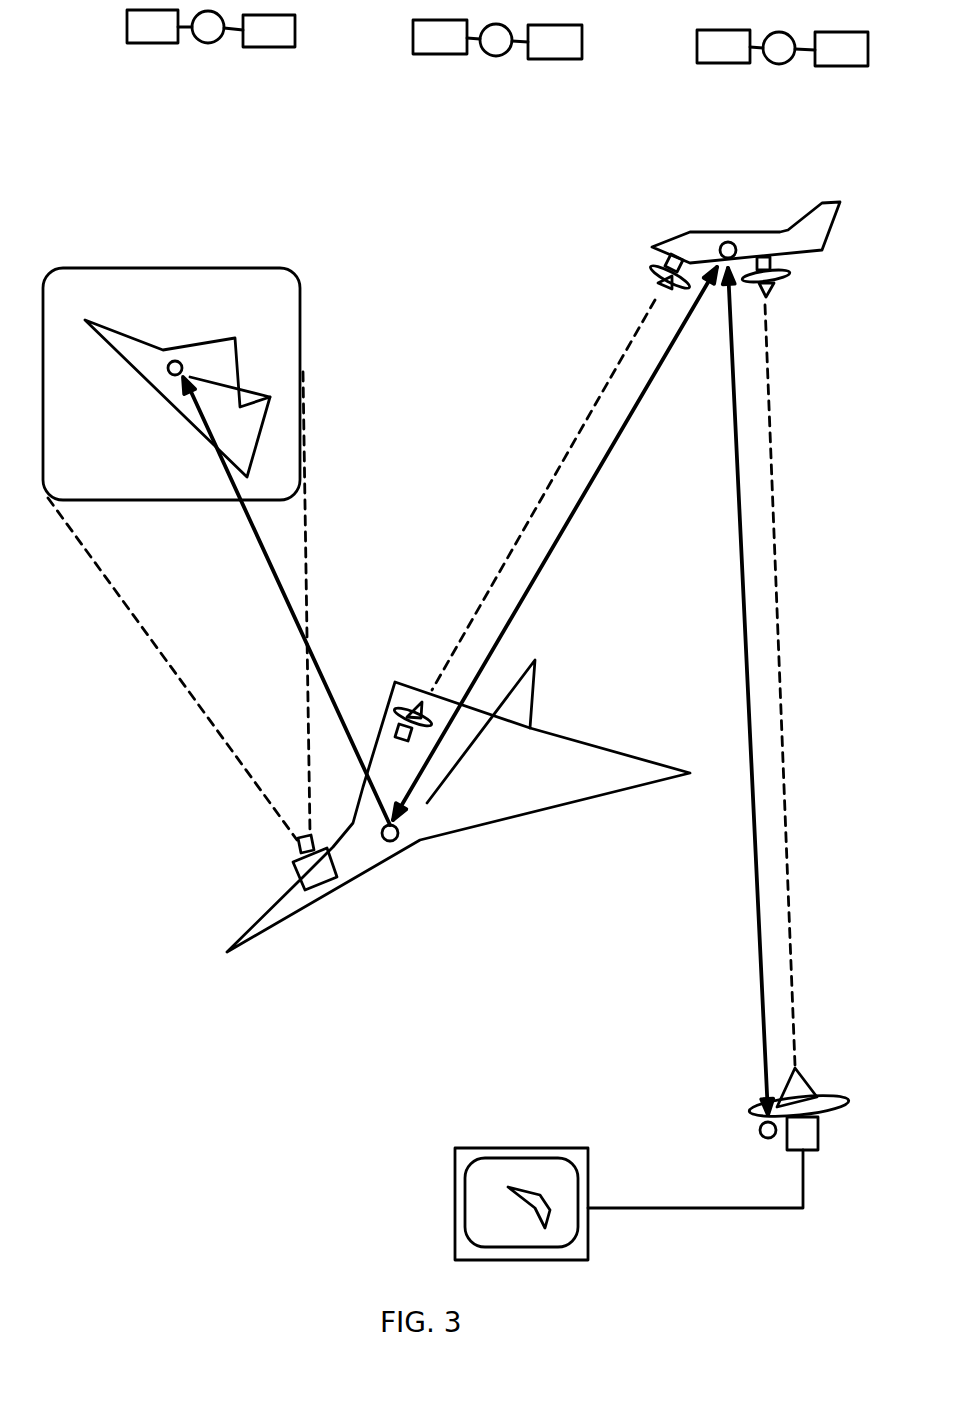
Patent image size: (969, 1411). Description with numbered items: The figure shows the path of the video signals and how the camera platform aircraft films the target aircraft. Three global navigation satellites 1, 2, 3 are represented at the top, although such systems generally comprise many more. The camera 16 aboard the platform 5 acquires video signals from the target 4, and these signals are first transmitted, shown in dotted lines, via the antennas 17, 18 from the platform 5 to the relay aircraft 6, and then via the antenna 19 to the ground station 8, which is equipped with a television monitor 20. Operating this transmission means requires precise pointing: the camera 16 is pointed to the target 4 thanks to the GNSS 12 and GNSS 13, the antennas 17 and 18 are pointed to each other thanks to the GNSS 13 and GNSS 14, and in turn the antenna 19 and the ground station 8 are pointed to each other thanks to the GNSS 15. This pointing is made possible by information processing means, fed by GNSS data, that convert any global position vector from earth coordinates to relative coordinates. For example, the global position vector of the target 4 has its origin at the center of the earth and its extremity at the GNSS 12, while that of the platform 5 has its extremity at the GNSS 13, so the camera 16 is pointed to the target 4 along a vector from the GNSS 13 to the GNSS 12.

The satellite 1 is at (211, 48).
The satellite 2 is at (497, 60).
The satellite 3 is at (782, 69).
The target aircraft 4 is at (171, 384).
The platform aircraft 5 is at (458, 806).
The relay aircraft 6 is at (740, 249).
The ground station 8 is at (784, 1111).
The GNSS 12 is at (177, 398).
The GNSS 13 is at (373, 847).
The GNSS 14 is at (727, 232).
The GNSS 15 is at (747, 1138).
The camera 16 is at (294, 862).
The antenna 17 is at (413, 736).
The antenna 18 is at (656, 277).
The antenna 19 is at (775, 286).
The television monitor 20 is at (521, 1190).